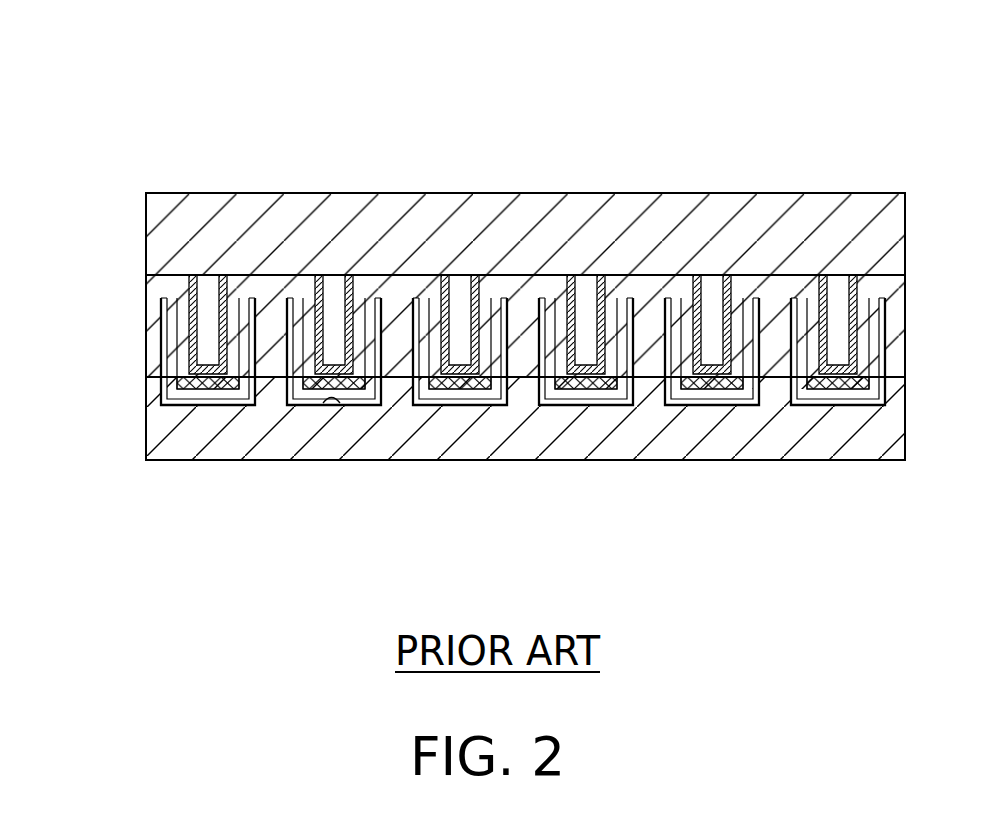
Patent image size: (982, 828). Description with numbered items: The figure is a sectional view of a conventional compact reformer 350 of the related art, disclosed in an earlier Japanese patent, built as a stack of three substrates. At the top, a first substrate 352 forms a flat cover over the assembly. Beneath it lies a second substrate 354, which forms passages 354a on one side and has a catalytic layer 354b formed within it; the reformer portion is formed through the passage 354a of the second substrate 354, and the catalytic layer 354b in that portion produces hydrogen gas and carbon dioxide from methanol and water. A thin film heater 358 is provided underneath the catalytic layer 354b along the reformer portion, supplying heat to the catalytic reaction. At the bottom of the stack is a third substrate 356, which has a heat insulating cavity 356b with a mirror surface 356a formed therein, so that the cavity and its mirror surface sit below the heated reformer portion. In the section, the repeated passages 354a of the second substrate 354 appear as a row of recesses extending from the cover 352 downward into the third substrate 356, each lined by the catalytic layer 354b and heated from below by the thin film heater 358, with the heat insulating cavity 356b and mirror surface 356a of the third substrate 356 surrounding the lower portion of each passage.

The compact reformer 350 is at (466, 281).
The first substrate 352 is at (162, 233).
The second substrate 354 is at (469, 347).
The passage 354a is at (207, 290).
The catalytic layer 354b is at (200, 350).
The third substrate 356 is at (525, 429).
The mirror surface 356a is at (343, 405).
The heat insulating cavity 356b is at (458, 392).
The thin film heater 358 is at (206, 385).